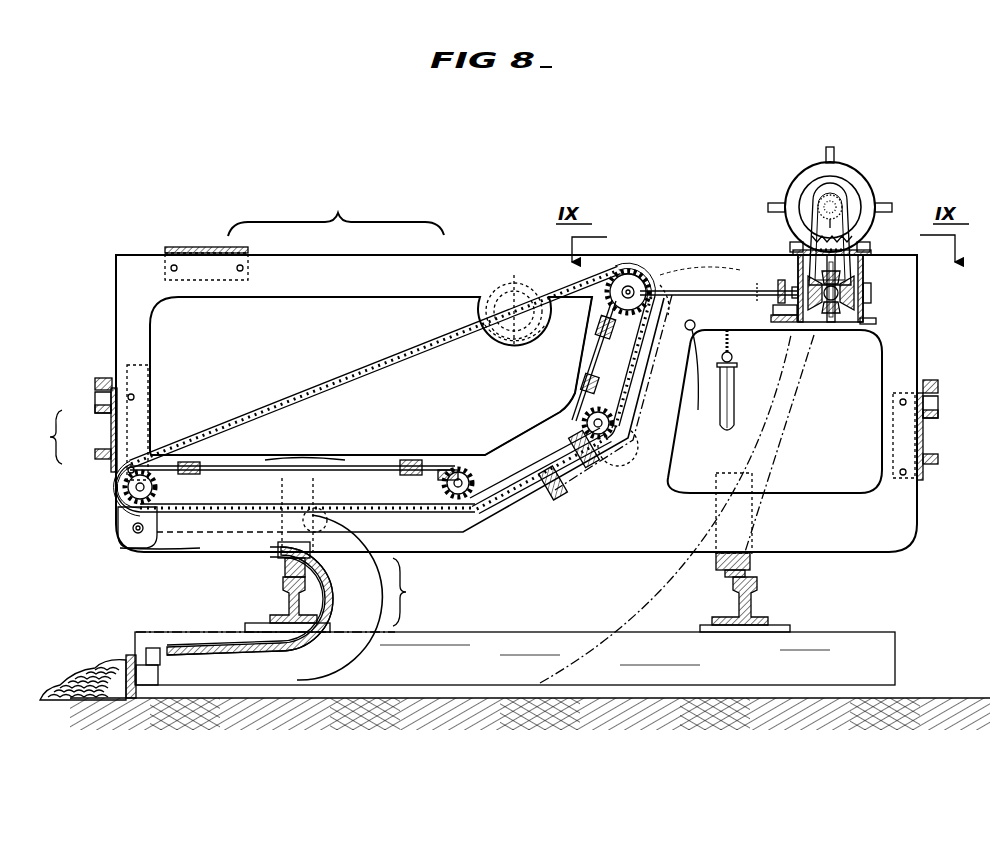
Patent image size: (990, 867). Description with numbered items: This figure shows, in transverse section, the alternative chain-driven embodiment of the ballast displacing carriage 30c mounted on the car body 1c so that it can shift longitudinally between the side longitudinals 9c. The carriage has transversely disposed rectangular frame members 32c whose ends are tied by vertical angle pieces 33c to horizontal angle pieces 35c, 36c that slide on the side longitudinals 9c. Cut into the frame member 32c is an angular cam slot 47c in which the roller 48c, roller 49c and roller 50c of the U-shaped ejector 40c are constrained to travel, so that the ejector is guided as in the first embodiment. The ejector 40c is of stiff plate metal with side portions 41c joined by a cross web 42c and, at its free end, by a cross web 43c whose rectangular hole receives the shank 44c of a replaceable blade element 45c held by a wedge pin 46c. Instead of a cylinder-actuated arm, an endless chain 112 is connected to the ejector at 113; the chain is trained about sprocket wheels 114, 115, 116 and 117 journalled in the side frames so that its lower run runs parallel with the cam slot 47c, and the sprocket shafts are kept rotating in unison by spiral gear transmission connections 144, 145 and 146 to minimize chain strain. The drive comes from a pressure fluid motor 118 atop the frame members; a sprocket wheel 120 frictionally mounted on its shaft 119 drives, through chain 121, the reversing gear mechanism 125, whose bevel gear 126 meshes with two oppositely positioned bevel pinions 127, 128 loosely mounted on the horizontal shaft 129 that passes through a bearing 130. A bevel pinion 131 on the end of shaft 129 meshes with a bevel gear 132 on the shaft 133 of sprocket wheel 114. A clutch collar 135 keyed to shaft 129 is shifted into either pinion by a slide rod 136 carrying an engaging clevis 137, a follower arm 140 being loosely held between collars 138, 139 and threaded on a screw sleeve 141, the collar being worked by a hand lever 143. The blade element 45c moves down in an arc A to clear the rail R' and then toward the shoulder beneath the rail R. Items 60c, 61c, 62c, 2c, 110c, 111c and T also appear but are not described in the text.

The carriage 30c is at (304, 237).
The dotted drive wheel 60c is at (514, 283).
The wheel opening 61c is at (512, 343).
The endless chain 112 is at (392, 370).
The bevel gear 132 is at (620, 262).
The shaft 133 is at (636, 268).
The bevel pinion 131 is at (655, 272).
The horizontal shaft 129 is at (690, 291).
The screw sleeve 141 is at (757, 283).
The motor shaft 119 is at (825, 198).
The pressure fluid motor 118 is at (862, 186).
The sprocket wheel 120 is at (825, 218).
The hand lever 143 is at (813, 226).
The chain 121 is at (848, 240).
The bearing 130 is at (790, 247).
The bevel gear 126 is at (840, 278).
The reversing gear mechanism 125 is at (886, 282).
The bevel pinion 128 is at (868, 312).
The follower arm 140 is at (773, 310).
The collar 138 is at (743, 346).
The bevel pinion 127 is at (812, 312).
The clutch collar 135 is at (848, 312).
The slide rod 136 is at (833, 314).
The engaging clevis 137 is at (840, 360).
The collar 139 is at (752, 362).
The pendulum cord 111c is at (704, 367).
The pendulum weight 110c is at (725, 428).
The side bracket 62c is at (104, 378).
The vertical angle piece 33c is at (517, 430).
The horizontal angle piece 35c is at (95, 400).
The car body 1c is at (42, 437).
The side longitudinal 9c is at (111, 438).
The horizontal angle piece 36c is at (95, 458).
The spiral gear transmission connection 144 is at (590, 355).
The sprocket wheel 114 is at (559, 376).
The sprocket wheel 115 is at (630, 394).
The spiral gear transmission connection 145 is at (530, 445).
The spiral gear transmission connection 146 is at (308, 462).
The sprocket wheel 117 is at (160, 490).
The sprocket wheel 116 is at (442, 486).
The chain connection 113 is at (118, 525).
The roller 48c is at (183, 535).
The roller 49c is at (135, 548).
The roller 50c is at (355, 513).
The angular cam slot 47c is at (585, 490).
The frame member 32c is at (640, 552).
The rail trolley 2c is at (275, 552).
The track rail R is at (285, 604).
The track rail R' is at (745, 604).
The ejector 40c is at (415, 592).
The cross web 42c is at (333, 627).
The side portion 41c is at (345, 648).
The cross web 43c is at (130, 652).
The shank 44c is at (160, 670).
The wedge pin 46c is at (152, 648).
The blade element 45c is at (110, 658).
The tie T is at (533, 632).
The arc A is at (665, 620).